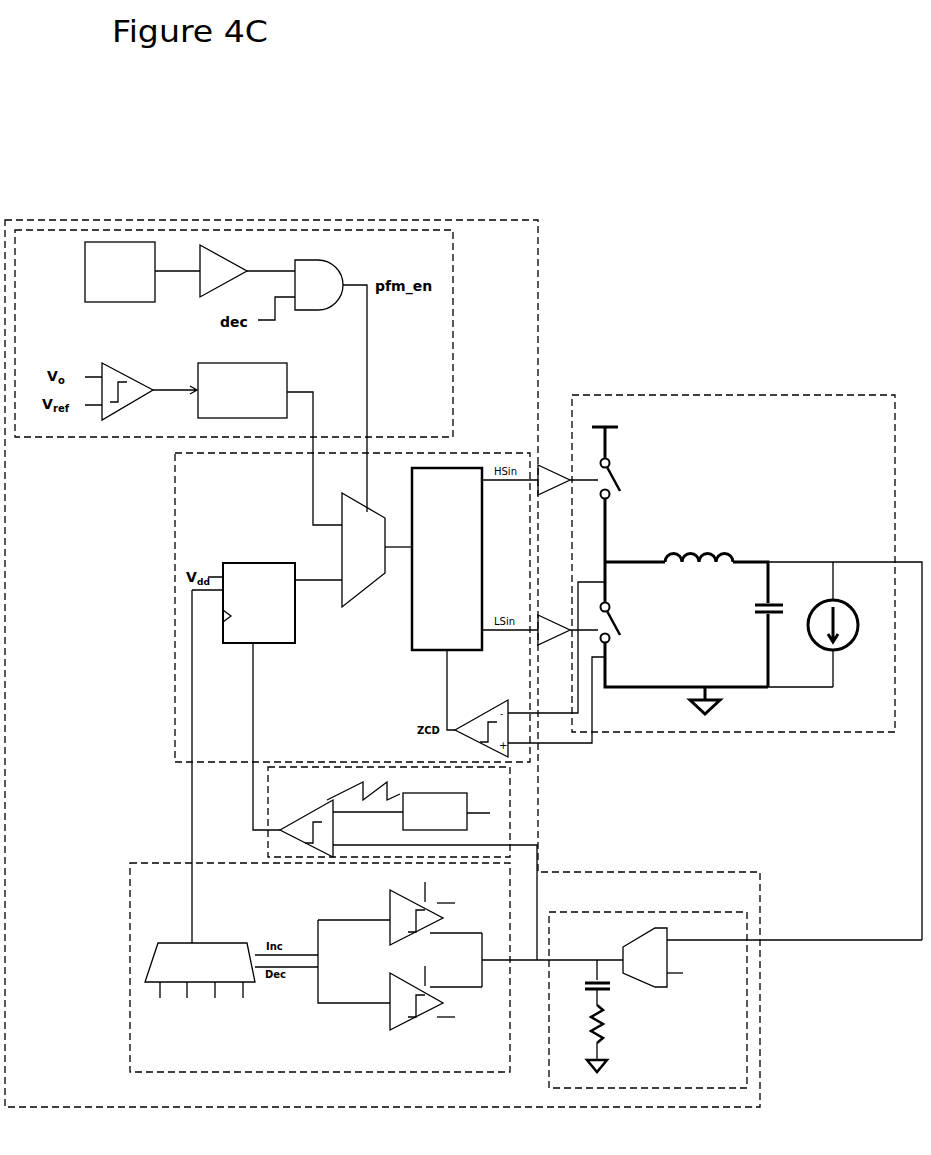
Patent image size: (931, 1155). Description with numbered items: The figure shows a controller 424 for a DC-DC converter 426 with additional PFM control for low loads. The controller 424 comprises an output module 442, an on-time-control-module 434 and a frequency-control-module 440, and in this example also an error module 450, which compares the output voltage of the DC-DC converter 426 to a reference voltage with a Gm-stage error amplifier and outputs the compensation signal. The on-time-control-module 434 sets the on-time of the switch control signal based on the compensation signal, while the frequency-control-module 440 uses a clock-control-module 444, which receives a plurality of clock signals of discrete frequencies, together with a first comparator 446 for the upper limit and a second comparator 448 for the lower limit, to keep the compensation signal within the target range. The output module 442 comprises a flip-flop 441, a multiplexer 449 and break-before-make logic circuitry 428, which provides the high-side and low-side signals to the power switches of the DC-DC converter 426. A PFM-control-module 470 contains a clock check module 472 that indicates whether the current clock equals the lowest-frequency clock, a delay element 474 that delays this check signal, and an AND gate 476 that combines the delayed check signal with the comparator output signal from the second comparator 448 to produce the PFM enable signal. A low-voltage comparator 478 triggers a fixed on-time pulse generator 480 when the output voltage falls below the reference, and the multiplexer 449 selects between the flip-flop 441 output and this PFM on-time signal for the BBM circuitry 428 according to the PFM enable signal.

The controller 424 is at (67, 218).
The PFM-control-module 470 is at (453, 352).
The clock check module 472 is at (118, 302).
The delay element 474 is at (221, 256).
The AND gate 476 is at (314, 263).
The low-voltage comparator 478 is at (122, 368).
The fixed on-time pulse generator 480 is at (262, 368).
The DC-DC converter 426 is at (793, 395).
The output module 442 is at (175, 521).
The flip-flop 441 is at (260, 562).
The multiplexer 449 is at (362, 590).
The break before make (BBM) logic circuitry 428 is at (412, 635).
The on-time-control-module 434 is at (268, 843).
The frequency-control-module 440 is at (148, 863).
The clock-control-module 444 is at (160, 943).
The first comparator 446 is at (410, 915).
The second comparator 448 is at (410, 1015).
The error module 450 is at (723, 913).